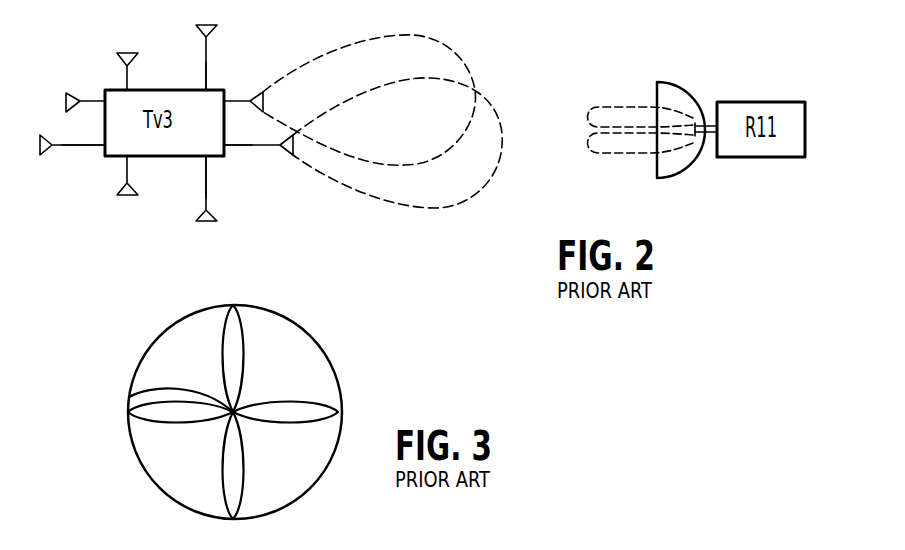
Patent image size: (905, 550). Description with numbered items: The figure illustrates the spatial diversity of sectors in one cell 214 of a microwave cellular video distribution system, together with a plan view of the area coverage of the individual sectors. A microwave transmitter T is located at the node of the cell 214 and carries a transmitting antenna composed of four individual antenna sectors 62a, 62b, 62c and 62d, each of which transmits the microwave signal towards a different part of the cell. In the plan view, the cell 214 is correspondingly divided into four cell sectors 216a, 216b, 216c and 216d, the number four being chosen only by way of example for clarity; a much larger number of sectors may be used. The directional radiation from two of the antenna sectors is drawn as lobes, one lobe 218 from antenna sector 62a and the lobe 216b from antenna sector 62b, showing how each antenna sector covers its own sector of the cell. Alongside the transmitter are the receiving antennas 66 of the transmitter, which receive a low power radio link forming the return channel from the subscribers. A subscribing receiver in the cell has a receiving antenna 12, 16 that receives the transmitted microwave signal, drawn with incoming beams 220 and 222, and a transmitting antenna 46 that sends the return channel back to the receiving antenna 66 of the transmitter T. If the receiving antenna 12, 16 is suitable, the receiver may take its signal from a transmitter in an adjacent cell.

In FIG. 2, the receiving antenna 66 is at (125, 80).
In FIG. 2, the antenna sector 62a is at (206, 62).
In FIG. 2, the antenna sector 62b is at (252, 147).
In FIG. 2, the antenna sector 62c is at (206, 198).
In FIG. 2, the antenna sector 62d is at (62, 147).
In FIG. 2, the transmit beam lobe 218 is at (355, 43).
In FIG. 2, the cell sector 216b is at (357, 190).
In FIG. 3, the cell sector 216b is at (285, 435).
In FIG. 3, the cell sector 216a is at (267, 358).
In FIG. 3, the cell sector 216c is at (202, 465).
In FIG. 3, the cell sector 216d is at (180, 389).
In FIG. 2, the receiving antenna 12 is at (665, 82).
In FIG. 2, the transmitting antenna 46 is at (695, 120).
In FIG. 2, the receiving antenna 16 is at (695, 138).
In FIG. 2, the incoming beam 220 is at (605, 107).
In FIG. 2, the incoming beam 222 is at (605, 155).
In FIG. 3, the cell 214 is at (143, 473).
In FIG. 3, the transmitter T is at (130, 393).